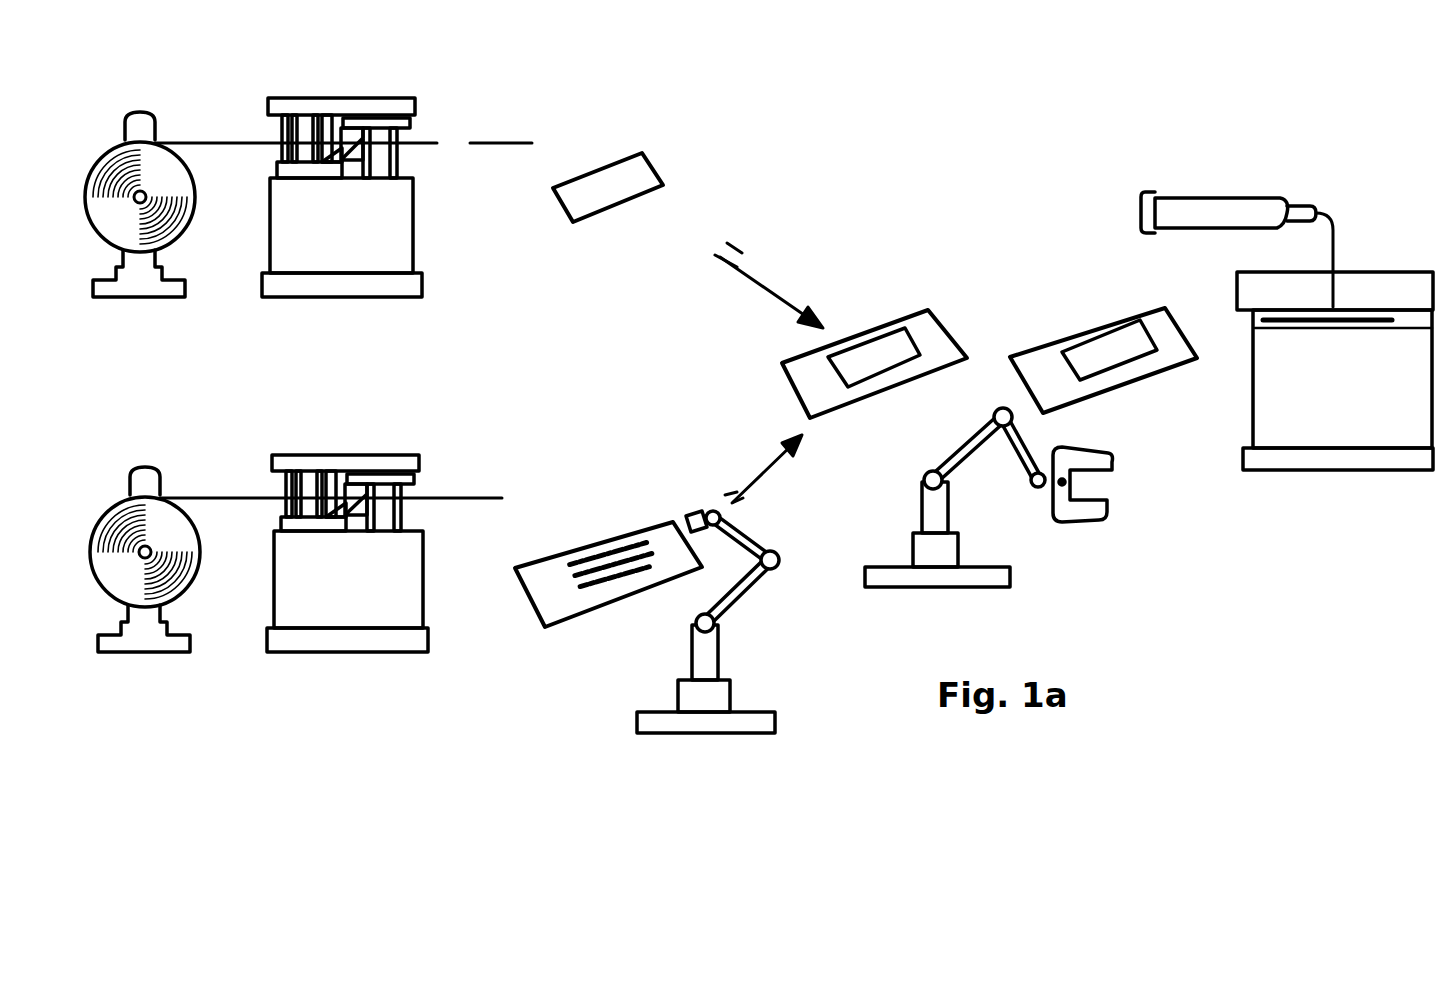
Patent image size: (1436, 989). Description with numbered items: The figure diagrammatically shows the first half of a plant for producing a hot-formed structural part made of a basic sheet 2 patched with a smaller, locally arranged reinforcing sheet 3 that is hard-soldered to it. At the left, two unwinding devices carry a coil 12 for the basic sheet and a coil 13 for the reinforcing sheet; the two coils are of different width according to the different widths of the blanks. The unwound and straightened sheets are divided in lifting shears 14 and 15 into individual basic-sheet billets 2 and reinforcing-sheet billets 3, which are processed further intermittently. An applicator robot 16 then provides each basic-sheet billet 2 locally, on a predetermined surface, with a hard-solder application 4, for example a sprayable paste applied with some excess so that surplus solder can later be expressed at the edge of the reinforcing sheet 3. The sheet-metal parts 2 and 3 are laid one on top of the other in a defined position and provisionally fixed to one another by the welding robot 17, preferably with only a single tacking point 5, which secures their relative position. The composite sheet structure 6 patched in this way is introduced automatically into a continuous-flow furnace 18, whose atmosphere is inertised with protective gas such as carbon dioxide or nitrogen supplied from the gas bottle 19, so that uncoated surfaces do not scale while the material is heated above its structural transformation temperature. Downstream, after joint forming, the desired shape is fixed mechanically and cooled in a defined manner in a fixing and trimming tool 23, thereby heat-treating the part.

The basic sheet 2 is at (480, 497).
The reinforcing sheet 3 is at (513, 142).
The hard-solder application 4 is at (608, 550).
The tacking point 5 is at (1110, 352).
The composite sheet structure 6 is at (1039, 335).
The coil 12 is at (185, 537).
The coil 13 is at (182, 187).
The lifting shears 14 is at (337, 452).
The lifting shears 15 is at (345, 98).
The applicator robot 16 is at (705, 658).
The welding robot 17 is at (940, 510).
The continuous-flow furnace 18 is at (1350, 414).
The gas bottle 19 is at (1223, 208).
The fixing and trimming tool 23 is at (882, 365).